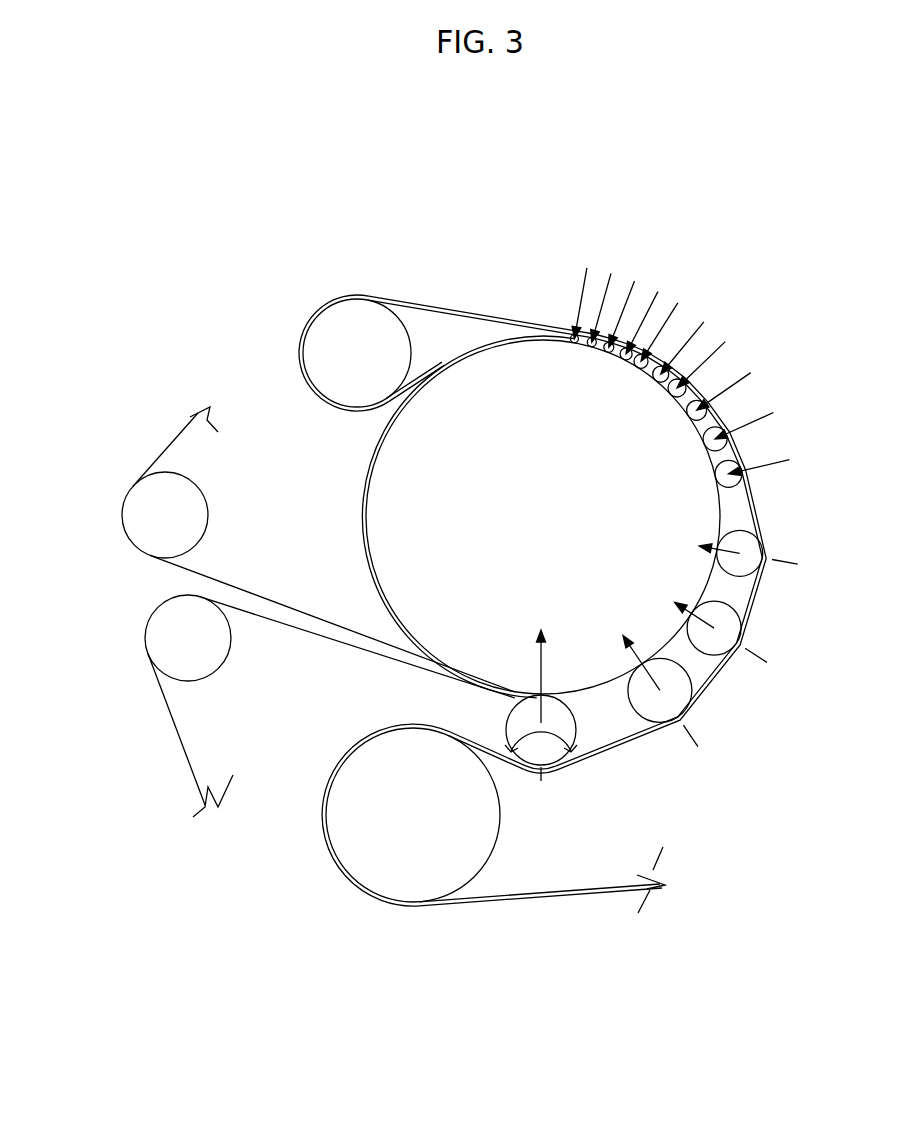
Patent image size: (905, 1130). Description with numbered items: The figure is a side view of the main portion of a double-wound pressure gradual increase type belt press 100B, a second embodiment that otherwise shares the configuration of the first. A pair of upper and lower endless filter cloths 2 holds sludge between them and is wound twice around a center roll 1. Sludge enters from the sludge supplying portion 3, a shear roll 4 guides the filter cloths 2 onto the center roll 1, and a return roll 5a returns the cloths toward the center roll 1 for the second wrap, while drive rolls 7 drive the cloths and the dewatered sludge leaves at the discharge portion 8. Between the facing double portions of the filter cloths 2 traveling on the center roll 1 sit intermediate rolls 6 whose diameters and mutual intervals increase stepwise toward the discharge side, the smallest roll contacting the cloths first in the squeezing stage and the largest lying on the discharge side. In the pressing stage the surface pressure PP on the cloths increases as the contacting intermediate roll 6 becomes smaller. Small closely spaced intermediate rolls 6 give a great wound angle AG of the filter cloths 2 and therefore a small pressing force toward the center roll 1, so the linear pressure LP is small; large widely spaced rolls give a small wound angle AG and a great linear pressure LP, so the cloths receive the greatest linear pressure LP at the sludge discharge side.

The double-wound pressure gradual increase type belt press 100B is at (638, 178).
The center roll 1 is at (515, 370).
The filter cloths 2 is at (555, 888).
The sludge supplying portion 3 is at (700, 878).
The shear roll 4 is at (352, 853).
The return roll 5a is at (350, 315).
The intermediate rolls 6 is at (657, 712).
The drive rolls 7 is at (203, 513).
The discharge portion 8 is at (113, 577).
The surface pressure PP is at (679, 306).
The linear pressure LP is at (541, 663).
The wound angle AG is at (507, 724).